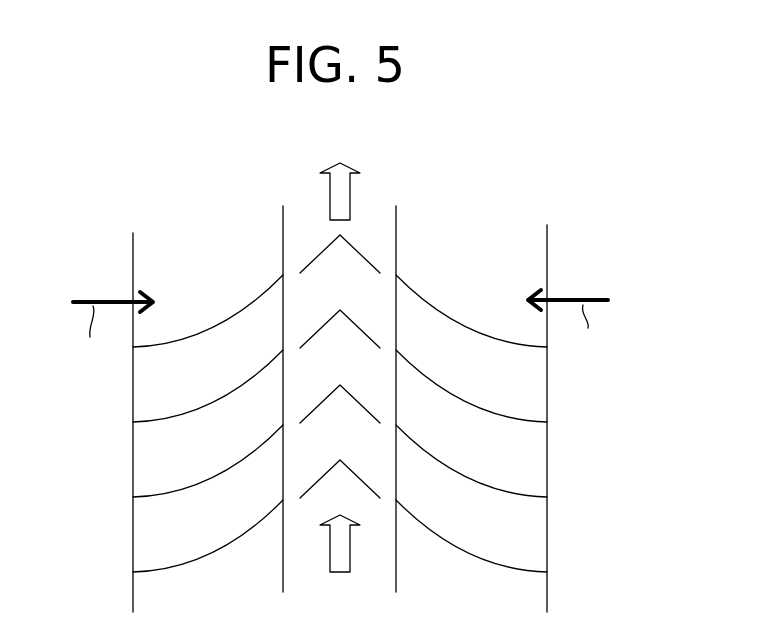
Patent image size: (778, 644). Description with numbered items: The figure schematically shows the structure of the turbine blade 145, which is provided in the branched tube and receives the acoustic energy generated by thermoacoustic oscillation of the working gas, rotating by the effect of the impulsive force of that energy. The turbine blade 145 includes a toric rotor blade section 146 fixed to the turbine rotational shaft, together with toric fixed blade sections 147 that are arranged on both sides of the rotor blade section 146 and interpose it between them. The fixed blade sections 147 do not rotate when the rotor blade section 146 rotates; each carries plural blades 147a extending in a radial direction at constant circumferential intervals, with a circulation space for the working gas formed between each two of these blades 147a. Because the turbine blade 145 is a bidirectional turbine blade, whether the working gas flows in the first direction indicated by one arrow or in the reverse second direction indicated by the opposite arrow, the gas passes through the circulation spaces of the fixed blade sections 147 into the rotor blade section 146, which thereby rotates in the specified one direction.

The turbine blade 145 is at (338, 372).
The rotor blade section 146 is at (388, 226).
The fixed blade section 147 is at (142, 253).
The blade 147a is at (157, 421).